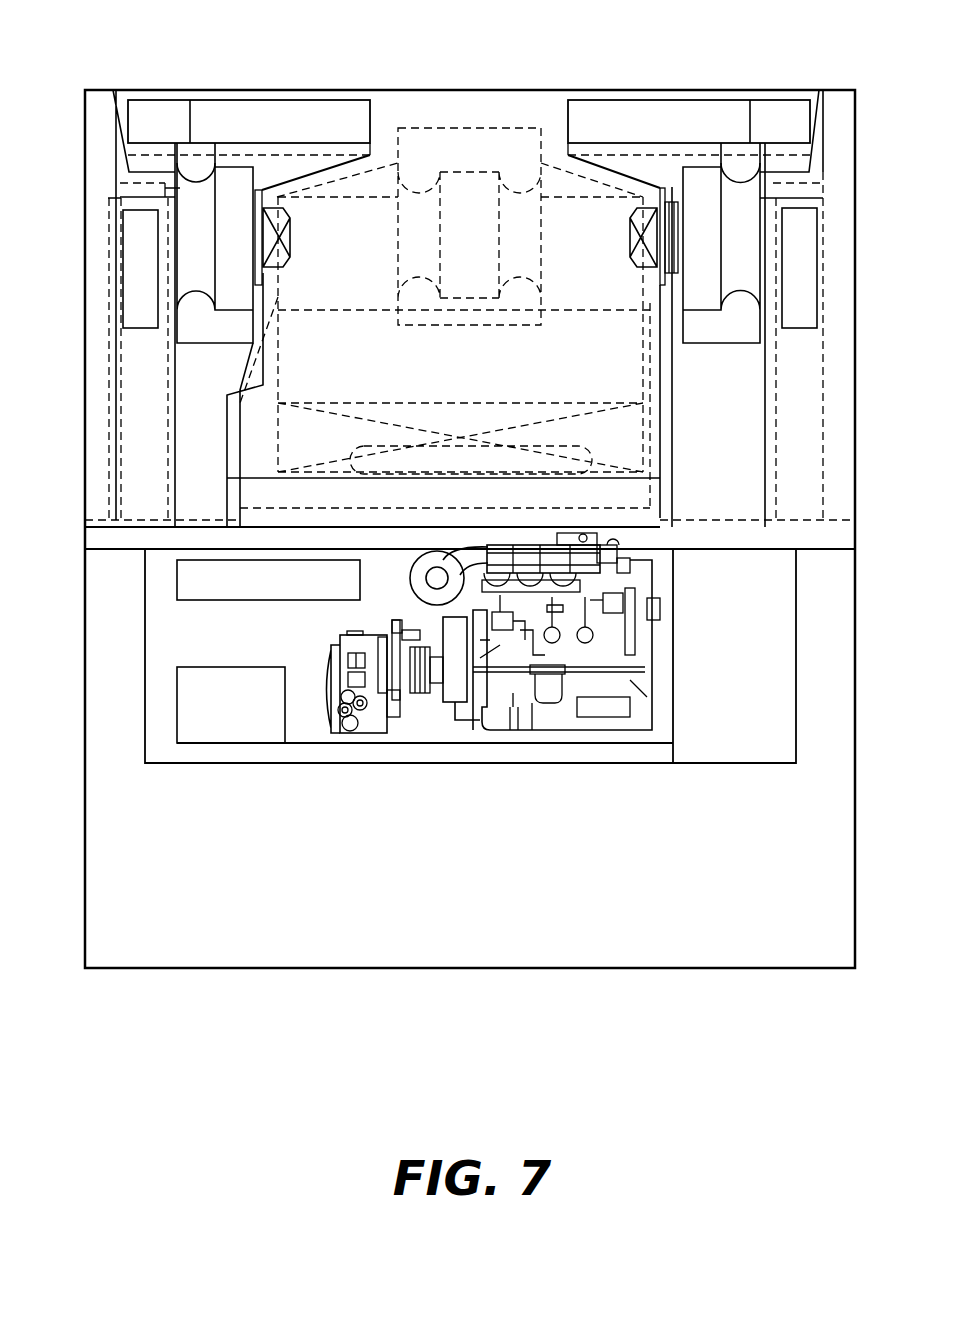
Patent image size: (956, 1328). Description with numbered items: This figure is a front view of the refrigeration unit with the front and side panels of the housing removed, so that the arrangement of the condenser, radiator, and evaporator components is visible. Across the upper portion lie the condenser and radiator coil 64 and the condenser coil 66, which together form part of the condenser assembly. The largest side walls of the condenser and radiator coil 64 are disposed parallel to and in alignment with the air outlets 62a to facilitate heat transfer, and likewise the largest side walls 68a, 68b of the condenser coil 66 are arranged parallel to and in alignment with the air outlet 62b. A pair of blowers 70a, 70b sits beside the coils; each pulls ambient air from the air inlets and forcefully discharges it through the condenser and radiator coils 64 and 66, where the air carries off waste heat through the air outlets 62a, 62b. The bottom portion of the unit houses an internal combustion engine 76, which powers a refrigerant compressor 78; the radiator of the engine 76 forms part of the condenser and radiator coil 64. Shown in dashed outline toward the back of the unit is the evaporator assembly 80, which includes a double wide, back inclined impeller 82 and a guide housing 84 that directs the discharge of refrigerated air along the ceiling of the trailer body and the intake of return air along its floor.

The air outlets 62a is at (786, 90).
The air outlet 62b is at (150, 90).
The condenser and radiator coil 64 is at (647, 132).
The condenser coil 66 is at (262, 132).
The side wall of condenser coil 68a is at (702, 100).
The side wall of condenser coil 68b is at (723, 143).
The blower 70a is at (697, 308).
The blower 70b is at (226, 308).
The internal combustion engine 76 is at (551, 721).
The refrigerant compressor 78 is at (365, 728).
The evaporator assembly 80 is at (452, 378).
The double wide, back inclined impeller 82 is at (468, 212).
The guide housing 84 is at (400, 227).